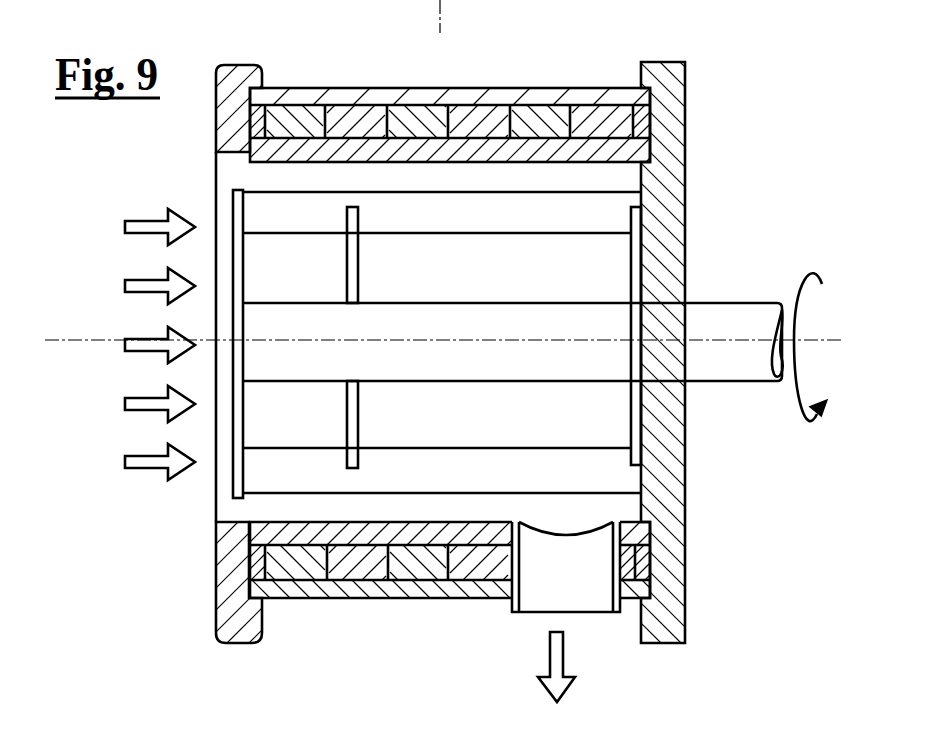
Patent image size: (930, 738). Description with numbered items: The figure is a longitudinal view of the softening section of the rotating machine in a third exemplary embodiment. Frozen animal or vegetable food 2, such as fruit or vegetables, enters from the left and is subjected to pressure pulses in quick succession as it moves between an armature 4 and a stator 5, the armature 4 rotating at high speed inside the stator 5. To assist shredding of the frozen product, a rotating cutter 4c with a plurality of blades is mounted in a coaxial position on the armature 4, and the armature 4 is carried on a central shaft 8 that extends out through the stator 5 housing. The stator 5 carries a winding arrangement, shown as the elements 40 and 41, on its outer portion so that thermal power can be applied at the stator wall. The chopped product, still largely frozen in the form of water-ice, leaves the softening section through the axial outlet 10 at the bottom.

The animal or vegetable food 2 is at (125, 233).
The armature 4 is at (232, 210).
The rotating cutter 4c is at (352, 212).
The stator 5 is at (213, 175).
The shaft 8 is at (711, 318).
The axial outlet 10 is at (512, 610).
The coil winding 40 is at (358, 110).
The stator core 41 is at (418, 100).